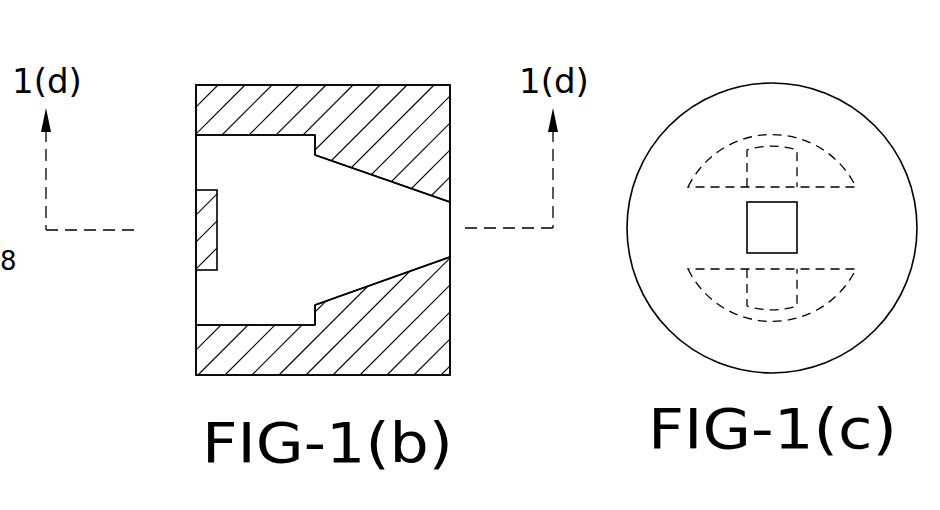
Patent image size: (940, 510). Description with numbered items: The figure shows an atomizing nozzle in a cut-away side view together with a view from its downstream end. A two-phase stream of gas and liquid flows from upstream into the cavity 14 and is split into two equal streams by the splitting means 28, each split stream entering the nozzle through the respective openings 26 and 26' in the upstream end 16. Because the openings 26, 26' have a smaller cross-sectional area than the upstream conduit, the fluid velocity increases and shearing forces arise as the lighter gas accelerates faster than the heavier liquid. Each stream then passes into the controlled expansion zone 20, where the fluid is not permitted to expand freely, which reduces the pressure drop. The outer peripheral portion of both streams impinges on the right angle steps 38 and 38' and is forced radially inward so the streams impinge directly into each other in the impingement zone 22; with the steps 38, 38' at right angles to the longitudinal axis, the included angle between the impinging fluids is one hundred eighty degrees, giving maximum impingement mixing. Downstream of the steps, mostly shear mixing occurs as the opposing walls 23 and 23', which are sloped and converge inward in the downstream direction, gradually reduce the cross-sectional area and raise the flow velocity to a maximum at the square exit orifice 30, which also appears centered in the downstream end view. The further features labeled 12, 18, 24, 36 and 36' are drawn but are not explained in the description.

In FIG. 1B, the nozzle body 12 is at (418, 85).
In FIG. 1C, the nozzle body 12 is at (810, 87).
In FIG. 1B, the cavity 14 is at (312, 242).
In FIG. 1B, the upstream end 16 is at (196, 103).
In FIG. 1B, the lower body portion 18 is at (452, 318).
In FIG. 1B, the controlled expansion zone 20 is at (240, 240).
In FIG. 1B, the impingement zone 22 is at (305, 193).
In FIG. 1B, the opposing wall 23 is at (382, 183).
In FIG. 1B, the opposing wall 23' is at (382, 280).
In FIG. 1B, the outlet region 24 is at (403, 225).
In FIG. 1B, the velocity-increasing opening 26 is at (160, 162).
In FIG. 1B, the velocity-increasing opening 26' is at (163, 297).
In FIG. 1B, the splitting means 28 is at (196, 228).
In FIG. 1B, the square exit orifice 30 is at (445, 243).
In FIG. 1C, the square exit orifice 30 is at (780, 230).
In FIG. 1B, the upper inner wall 36 is at (229, 124).
In FIG. 1B, the lower inner wall 36' is at (227, 352).
In FIG. 1B, the right angle step 38 is at (285, 154).
In FIG. 1B, the right angle step 38' is at (284, 306).